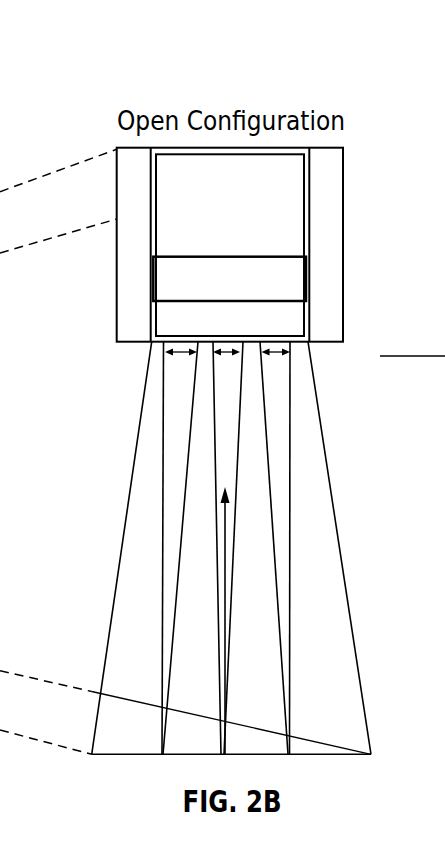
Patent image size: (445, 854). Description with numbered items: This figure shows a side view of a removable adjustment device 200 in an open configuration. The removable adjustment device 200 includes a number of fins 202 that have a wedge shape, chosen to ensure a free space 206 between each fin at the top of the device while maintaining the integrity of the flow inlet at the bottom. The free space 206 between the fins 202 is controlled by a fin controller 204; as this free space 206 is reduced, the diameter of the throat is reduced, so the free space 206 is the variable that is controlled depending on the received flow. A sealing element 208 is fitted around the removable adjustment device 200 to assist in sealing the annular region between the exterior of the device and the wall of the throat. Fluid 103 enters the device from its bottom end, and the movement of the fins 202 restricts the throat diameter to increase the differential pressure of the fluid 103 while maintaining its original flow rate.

The removable adjustment device 200 is at (110, 65).
The sealing element 208 is at (327, 192).
The fin controller 204 is at (292, 283).
The fins 202 is at (143, 445).
The free space 206 is at (274, 354).
The fluid 103 is at (225, 603).